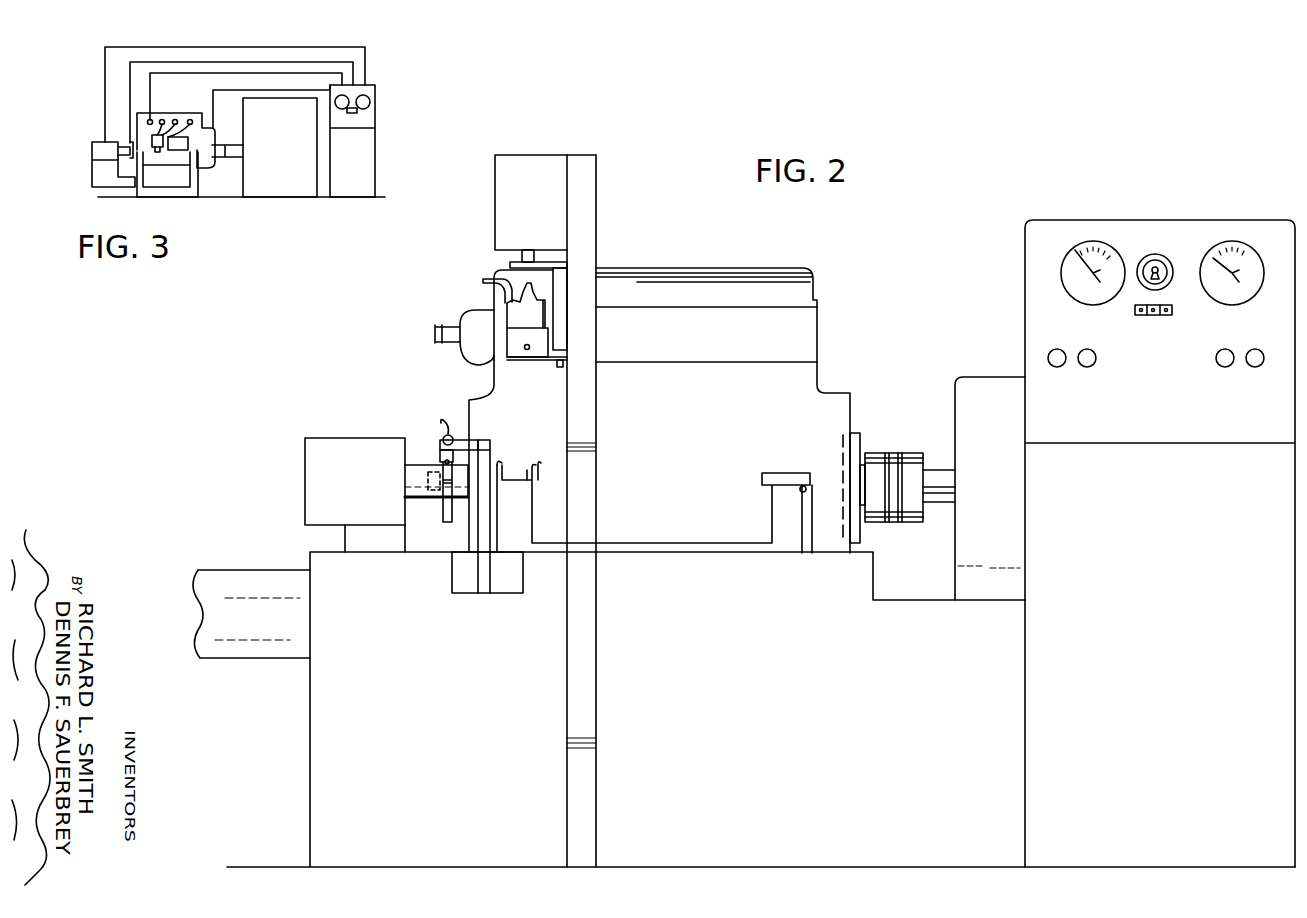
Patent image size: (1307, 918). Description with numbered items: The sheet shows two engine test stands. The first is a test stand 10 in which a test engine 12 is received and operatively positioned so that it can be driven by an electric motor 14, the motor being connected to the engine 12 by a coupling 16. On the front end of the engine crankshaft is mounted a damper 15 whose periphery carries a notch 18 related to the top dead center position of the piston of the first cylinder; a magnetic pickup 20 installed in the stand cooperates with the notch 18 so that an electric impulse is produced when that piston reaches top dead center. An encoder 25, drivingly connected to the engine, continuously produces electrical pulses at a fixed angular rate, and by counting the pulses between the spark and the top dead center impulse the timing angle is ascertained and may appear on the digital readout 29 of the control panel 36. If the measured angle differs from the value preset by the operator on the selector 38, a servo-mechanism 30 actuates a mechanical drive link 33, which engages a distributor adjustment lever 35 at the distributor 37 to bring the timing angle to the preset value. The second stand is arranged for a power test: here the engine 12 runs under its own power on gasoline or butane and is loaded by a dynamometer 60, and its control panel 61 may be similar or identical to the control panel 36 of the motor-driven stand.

In FIG. 2, the test stand 10 is at (730, 553).
In FIG. 2, the test engine 12 is at (802, 371).
In FIG. 3, the test engine 12 is at (167, 118).
In FIG. 2, the electric motor 14 is at (993, 378).
In FIG. 2, the damper 15 is at (442, 508).
In FIG. 2, the coupling 16 is at (905, 453).
In FIG. 2, the notch 18 is at (447, 516).
In FIG. 2, the magnetic pickup 20 is at (440, 448).
In FIG. 2, the encoder 25 is at (305, 463).
In FIG. 2, the digital readout 29 is at (1157, 316).
In FIG. 2, the servo-mechanism 30 is at (523, 164).
In FIG. 2, the mechanical drive link 33 is at (562, 300).
In FIG. 2, the distributor adjustment lever 35 is at (573, 360).
In FIG. 2, the control panel 36 is at (1088, 220).
In FIG. 2, the distributor 37 is at (513, 312).
In FIG. 2, the selector 38 is at (1168, 266).
In FIG. 3, the dynamometer 60 is at (282, 195).
In FIG. 3, the control panel 61 is at (375, 117).